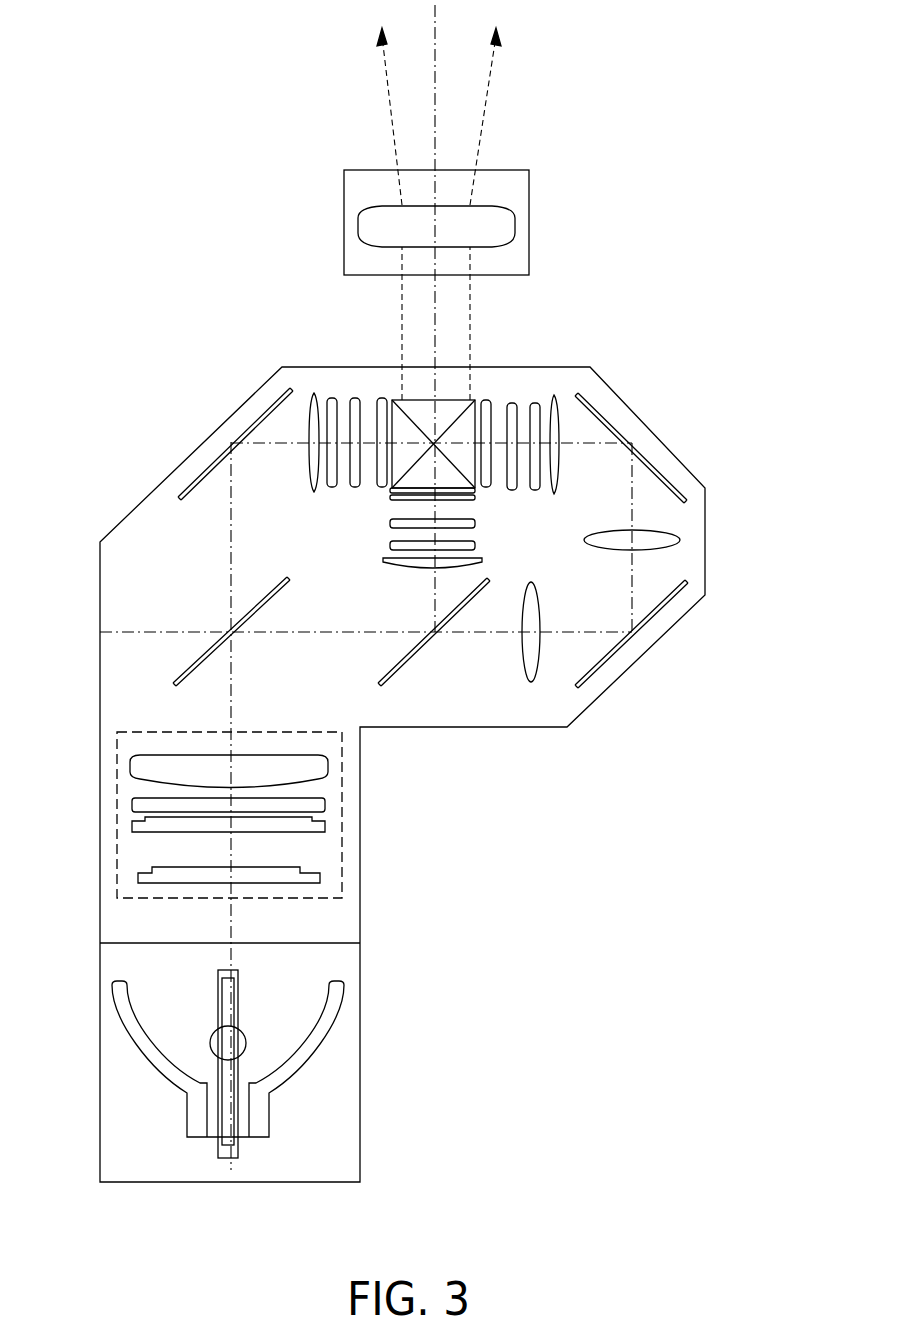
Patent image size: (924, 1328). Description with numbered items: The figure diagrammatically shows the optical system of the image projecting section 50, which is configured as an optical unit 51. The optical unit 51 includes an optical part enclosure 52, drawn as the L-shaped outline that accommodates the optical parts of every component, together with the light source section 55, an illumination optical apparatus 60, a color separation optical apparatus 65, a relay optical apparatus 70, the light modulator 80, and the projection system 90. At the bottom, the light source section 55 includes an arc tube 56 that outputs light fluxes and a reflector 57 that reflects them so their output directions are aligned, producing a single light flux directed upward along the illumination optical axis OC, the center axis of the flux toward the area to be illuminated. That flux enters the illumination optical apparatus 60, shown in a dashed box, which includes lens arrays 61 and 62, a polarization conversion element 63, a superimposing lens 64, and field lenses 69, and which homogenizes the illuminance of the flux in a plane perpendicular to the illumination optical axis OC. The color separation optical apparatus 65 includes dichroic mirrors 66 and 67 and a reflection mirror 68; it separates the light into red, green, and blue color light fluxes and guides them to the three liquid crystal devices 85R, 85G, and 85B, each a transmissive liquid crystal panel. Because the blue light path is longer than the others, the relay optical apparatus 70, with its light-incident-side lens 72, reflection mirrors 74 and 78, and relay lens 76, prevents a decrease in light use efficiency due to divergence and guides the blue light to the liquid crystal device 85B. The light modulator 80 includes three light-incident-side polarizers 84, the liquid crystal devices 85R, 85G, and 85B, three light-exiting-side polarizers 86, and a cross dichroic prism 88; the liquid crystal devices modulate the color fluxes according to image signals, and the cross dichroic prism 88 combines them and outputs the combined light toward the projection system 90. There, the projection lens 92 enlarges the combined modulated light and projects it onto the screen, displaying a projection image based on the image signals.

The image projecting section 50 is at (134, 60).
The optical unit 51 is at (121, 360).
The optical part enclosure 52 is at (362, 805).
The light source section 55 is at (385, 1063).
The arc tube 56 is at (205, 1040).
The reflector 57 is at (152, 1053).
The illumination optical apparatus 60 is at (343, 858).
The lens array 61 is at (140, 878).
The lens array 62 is at (130, 828).
The polarization conversion element 63 is at (130, 805).
The superimposing lens 64 is at (130, 770).
The color separation optical apparatus 65 is at (132, 562).
The dichroic mirror 66 is at (207, 650).
The dichroic mirror 67 is at (380, 660).
The reflection mirror 68 is at (210, 455).
The field lens 69 is at (309, 470).
The relay optical apparatus 70 is at (700, 632).
The light-incident-side lens 72 is at (531, 682).
The reflection mirror 74 is at (632, 665).
The relay lens 76 is at (683, 542).
The reflection mirror 78 is at (680, 462).
The light modulator 80 is at (365, 380).
The light-incident-side polarizer 84 is at (330, 490).
The liquid crystal device 85R is at (352, 396).
The liquid crystal device 85G is at (388, 526).
The liquid crystal device 85B is at (513, 403).
The light-exiting-side polarizer 86 is at (392, 498).
The cross dichroic prism 88 is at (440, 400).
The projection system 90 is at (304, 168).
The projection lens 92 is at (360, 212).
The illumination optical axis OC is at (231, 915).